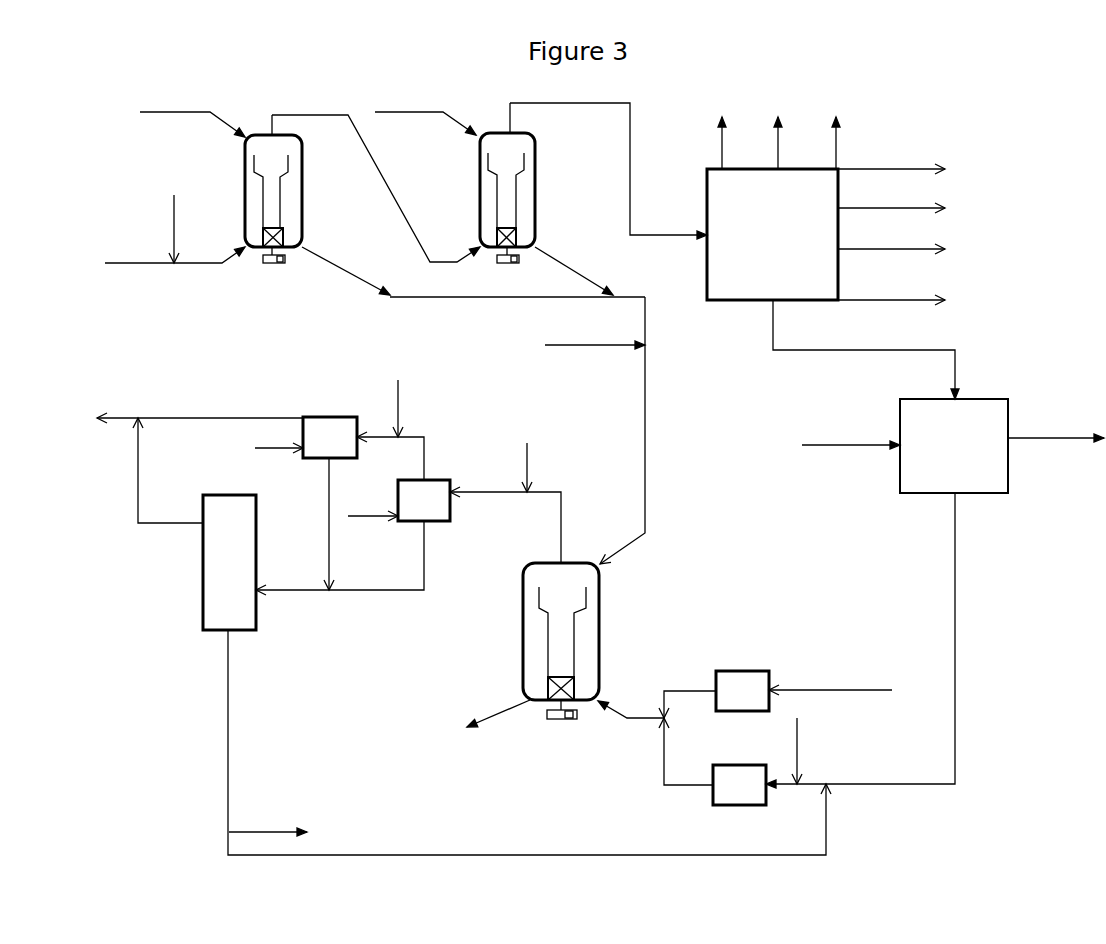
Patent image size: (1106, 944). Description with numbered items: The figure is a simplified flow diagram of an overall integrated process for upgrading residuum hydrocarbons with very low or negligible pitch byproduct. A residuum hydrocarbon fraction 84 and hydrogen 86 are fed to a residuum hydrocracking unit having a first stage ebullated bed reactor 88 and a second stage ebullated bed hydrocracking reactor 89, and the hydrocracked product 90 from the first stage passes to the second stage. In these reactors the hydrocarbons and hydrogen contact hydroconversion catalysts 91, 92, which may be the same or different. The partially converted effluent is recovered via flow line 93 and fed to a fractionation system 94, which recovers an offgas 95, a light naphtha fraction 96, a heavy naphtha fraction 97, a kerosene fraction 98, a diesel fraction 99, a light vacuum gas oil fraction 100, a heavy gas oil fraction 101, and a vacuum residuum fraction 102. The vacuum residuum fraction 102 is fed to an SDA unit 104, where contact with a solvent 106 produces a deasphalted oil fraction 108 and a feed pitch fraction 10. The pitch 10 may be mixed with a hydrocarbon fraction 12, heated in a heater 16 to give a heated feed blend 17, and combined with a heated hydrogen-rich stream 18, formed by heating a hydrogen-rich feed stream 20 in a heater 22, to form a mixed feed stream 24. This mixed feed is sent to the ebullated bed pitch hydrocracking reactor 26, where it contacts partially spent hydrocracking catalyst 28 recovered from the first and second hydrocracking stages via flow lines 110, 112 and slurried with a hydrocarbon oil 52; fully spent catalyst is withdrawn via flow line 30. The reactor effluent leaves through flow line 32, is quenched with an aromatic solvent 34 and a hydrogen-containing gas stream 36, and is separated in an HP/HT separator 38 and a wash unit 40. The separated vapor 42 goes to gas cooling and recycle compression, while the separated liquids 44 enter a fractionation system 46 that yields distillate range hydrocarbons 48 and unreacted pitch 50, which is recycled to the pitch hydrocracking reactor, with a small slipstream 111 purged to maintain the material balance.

The pitch 10 is at (945, 568).
The hydrocarbon fraction 12 is at (800, 752).
The heater 16 is at (739, 785).
The heated feed blend 17 is at (666, 752).
The heated hydrogen-rich stream 18 is at (672, 690).
The hydrogen-rich feed stream 20 is at (848, 690).
The heater 22 is at (742, 691).
The mixed feed stream 24 is at (620, 712).
The ebullated bed pitch hydrocracking reactor 26 is at (561, 641).
The partially spent hydrocracking catalyst 28 is at (627, 542).
The flow line 30 is at (498, 716).
The flow line 32 is at (562, 498).
The aromatic solvent 34 is at (400, 406).
The hydrogen-containing gas stream 36 is at (268, 450).
The high pressure high temperature separator 38 is at (403, 476).
The wash unit 40 is at (330, 437).
The separated vapor 42 is at (218, 418).
The separated liquids 44 is at (282, 590).
The fractionation system 46 is at (229, 562).
The distillate range hydrocarbons 48 is at (140, 498).
The unreacted pitch 50 is at (230, 780).
The hydrocarbon oil 52 is at (597, 345).
The residuum hydrocarbon fraction 84 is at (152, 256).
The hydrogen 86 is at (178, 225).
The first stage ebullated bed reactor 88 is at (273, 189).
The second stage ebullated bed hydrocracking reactor 89 is at (507, 183).
The hydrocracked product 90 is at (458, 248).
The hydroconversion catalyst 91 is at (152, 104).
The hydroconversion catalyst 92 is at (382, 104).
The flow line 93 is at (509, 98).
The fractionation system 94 is at (772, 234).
The offgas 95 is at (718, 143).
The light naphtha fraction 96 is at (774, 143).
The heavy naphtha fraction 97 is at (833, 143).
The kerosene fraction 98 is at (901, 166).
The diesel fraction 99 is at (906, 206).
The light vacuum gas oil fraction 100 is at (916, 246).
The heavy gas oil fraction 101 is at (914, 297).
The vacuum residuum fraction 102 is at (882, 348).
The SDA unit 104 is at (954, 446).
The solvent 106 is at (868, 441).
The deasphalted oil fraction 108 is at (1076, 434).
The flow line 110 is at (338, 275).
The slipstream 111 is at (284, 826).
The flow line 112 is at (554, 263).